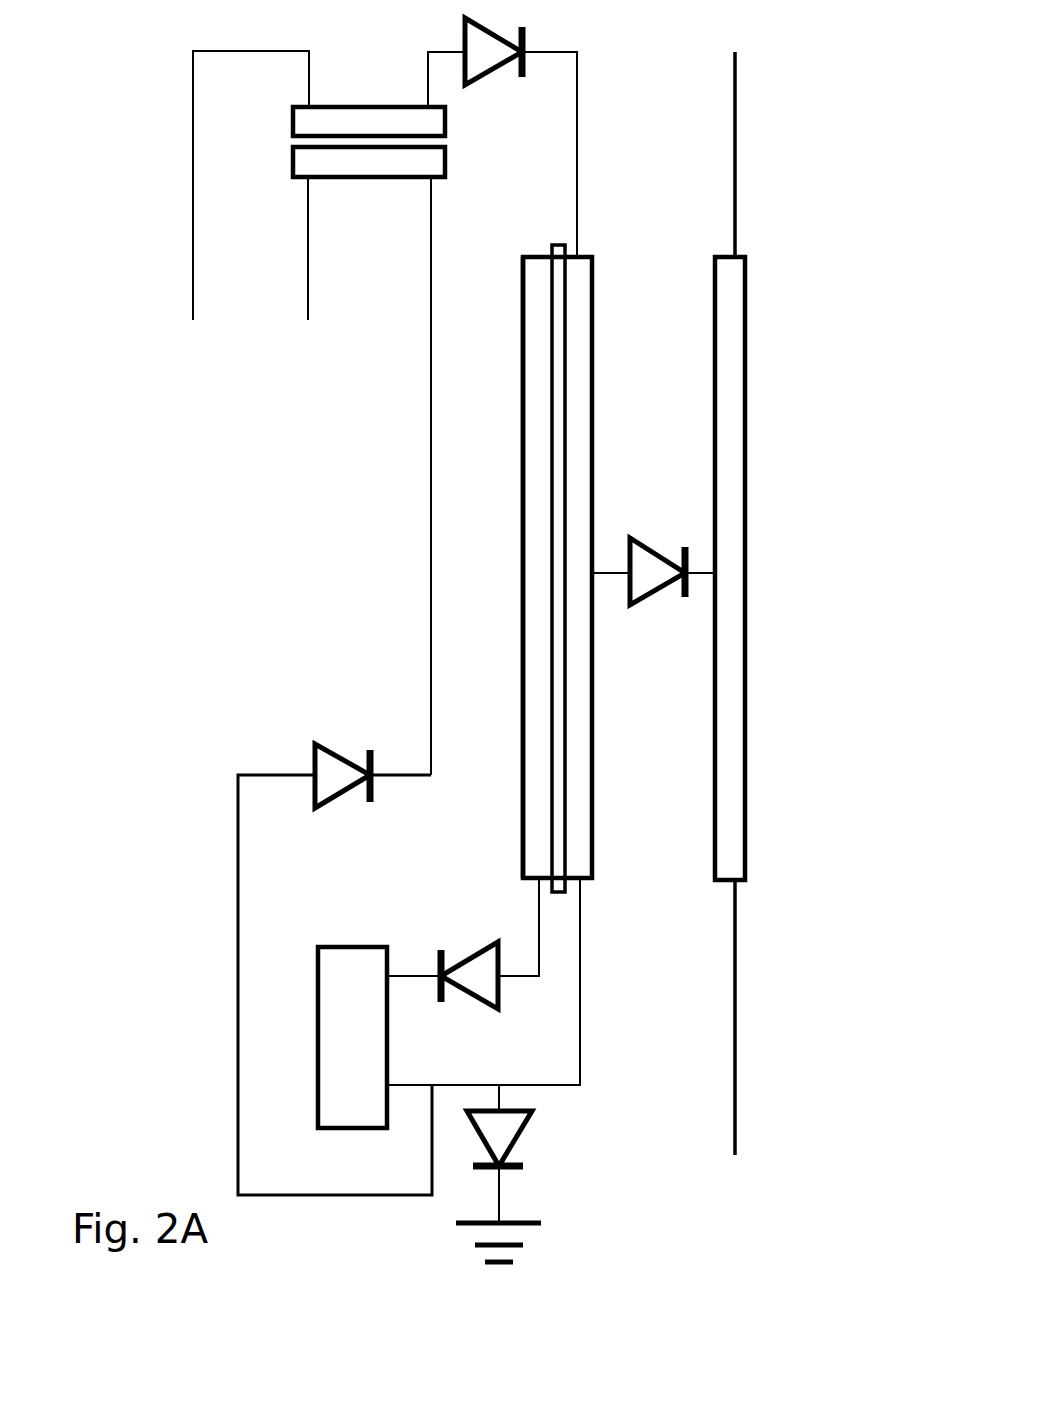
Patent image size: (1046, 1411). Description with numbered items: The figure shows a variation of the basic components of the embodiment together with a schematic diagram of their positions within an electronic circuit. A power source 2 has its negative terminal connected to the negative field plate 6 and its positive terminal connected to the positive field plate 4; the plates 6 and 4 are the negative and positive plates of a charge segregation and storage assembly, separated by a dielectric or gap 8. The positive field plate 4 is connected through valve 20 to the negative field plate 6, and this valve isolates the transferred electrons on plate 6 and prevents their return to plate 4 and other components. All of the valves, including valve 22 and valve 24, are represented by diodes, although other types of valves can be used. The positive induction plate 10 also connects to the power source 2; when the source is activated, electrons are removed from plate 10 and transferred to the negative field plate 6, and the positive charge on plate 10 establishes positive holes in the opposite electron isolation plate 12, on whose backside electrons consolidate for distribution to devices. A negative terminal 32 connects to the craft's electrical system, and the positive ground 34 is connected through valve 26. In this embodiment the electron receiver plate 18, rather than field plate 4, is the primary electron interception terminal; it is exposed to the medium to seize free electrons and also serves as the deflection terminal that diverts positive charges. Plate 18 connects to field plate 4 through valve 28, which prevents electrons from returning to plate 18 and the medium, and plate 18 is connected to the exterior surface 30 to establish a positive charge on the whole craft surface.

The power source 2 is at (355, 928).
The positive field plate 4 is at (606, 298).
The negative field plate 6 is at (510, 298).
The dielectric/gap 8 is at (555, 232).
The positive induction plate 10 is at (358, 188).
The electron isolation plate 12 is at (382, 90).
The electron receiver plate 18 is at (757, 573).
The valve assembly 20 is at (470, 945).
The valve assembly 22 is at (497, 78).
The valve assembly 24 is at (342, 744).
The valve assembly 26 is at (525, 1140).
The valve assembly 28 is at (661, 540).
The exterior wall/deflection surface-terminal 30 is at (743, 190).
The negative terminal 32 is at (205, 325).
The positive ground 34 is at (472, 1237).